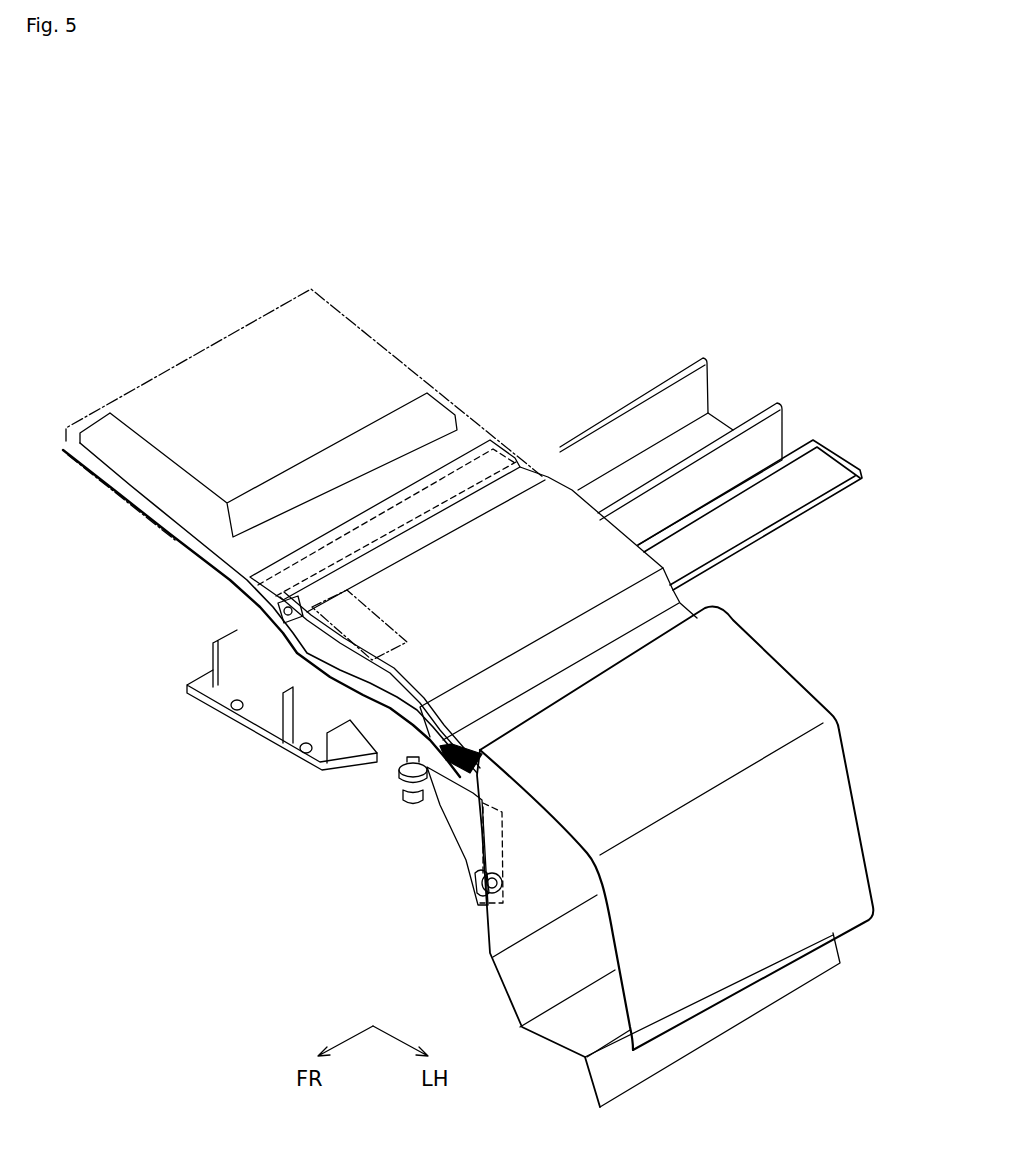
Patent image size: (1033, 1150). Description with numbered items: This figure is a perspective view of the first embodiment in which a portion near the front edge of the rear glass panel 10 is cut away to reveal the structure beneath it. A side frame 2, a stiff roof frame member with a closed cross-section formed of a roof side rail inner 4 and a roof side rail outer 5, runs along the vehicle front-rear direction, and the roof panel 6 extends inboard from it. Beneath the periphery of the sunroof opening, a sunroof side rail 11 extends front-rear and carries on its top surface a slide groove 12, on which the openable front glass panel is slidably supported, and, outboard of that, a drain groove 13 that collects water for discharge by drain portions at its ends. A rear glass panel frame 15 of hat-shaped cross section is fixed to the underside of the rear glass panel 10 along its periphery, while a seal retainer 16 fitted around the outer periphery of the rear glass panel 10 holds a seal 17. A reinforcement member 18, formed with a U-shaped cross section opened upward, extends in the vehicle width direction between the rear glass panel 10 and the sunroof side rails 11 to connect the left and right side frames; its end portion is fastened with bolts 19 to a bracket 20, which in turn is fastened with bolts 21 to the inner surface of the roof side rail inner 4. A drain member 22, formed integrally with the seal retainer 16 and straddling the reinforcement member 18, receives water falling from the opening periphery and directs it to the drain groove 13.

The side frame 2 is at (768, 624).
The roof side rail inner 4 is at (503, 990).
The roof side rail outer 5 is at (786, 677).
The roof panel 6 is at (558, 505).
The rear glass panel 10 is at (352, 310).
The sunroof side rail 11 is at (677, 364).
The slide groove 12 is at (232, 710).
The drain groove 13 is at (300, 753).
The rear glass panel frame 15 is at (153, 455).
The seal retainer 16 is at (280, 622).
The seal 17 is at (490, 493).
The reinforcement member 18 is at (205, 573).
The bolt 19 is at (403, 803).
The bracket 20 is at (450, 810).
The bolt 21 is at (478, 893).
The drain member 22 is at (280, 667).